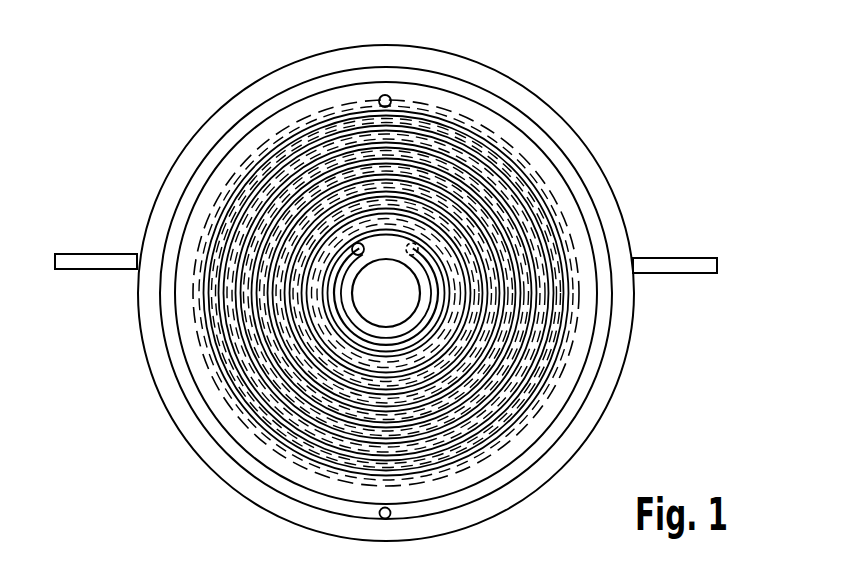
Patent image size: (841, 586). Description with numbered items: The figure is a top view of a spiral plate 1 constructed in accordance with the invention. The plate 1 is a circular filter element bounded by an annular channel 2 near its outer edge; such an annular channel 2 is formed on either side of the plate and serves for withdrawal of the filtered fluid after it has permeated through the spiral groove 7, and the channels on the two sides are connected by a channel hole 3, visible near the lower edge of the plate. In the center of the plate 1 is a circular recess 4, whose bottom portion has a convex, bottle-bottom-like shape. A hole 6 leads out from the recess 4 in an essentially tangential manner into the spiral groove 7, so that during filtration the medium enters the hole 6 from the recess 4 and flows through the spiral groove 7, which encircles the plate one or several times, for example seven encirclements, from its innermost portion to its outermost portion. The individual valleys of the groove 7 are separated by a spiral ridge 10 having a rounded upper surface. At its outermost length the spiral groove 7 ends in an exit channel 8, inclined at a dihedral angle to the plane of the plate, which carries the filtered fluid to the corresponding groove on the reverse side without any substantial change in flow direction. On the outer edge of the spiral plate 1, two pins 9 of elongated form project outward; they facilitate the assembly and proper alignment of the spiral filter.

The spiral plate 1 is at (568, 125).
The annular channel 2 is at (563, 172).
The channel hole 3 is at (379, 513).
The circular recess 4 is at (368, 297).
The hole 6 is at (352, 247).
The spiral groove 7 is at (457, 117).
The exit channel 8 is at (378, 98).
The pin 9 is at (100, 254).
The spiral ridge 10 is at (428, 117).